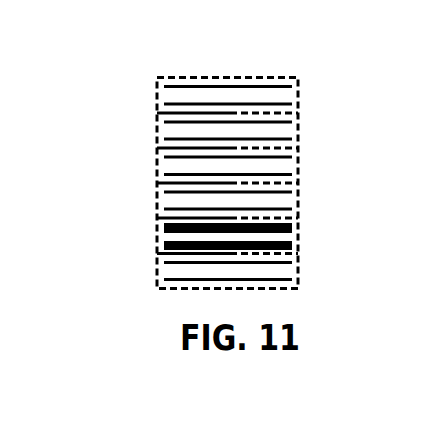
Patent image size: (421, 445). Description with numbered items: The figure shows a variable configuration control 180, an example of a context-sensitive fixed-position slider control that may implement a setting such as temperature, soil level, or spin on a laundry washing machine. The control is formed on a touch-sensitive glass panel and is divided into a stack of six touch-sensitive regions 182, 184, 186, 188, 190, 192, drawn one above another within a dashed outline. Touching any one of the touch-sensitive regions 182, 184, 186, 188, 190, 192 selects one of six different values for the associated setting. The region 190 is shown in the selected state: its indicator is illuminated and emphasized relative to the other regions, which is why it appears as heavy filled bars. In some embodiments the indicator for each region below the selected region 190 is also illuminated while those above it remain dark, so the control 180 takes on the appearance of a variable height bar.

The variable configuration control 180 is at (108, 85).
The touch-sensitive region 182 is at (156, 89).
The touch-sensitive region 184 is at (299, 132).
The touch-sensitive region 186 is at (156, 168).
The touch-sensitive region 188 is at (299, 202).
The touch-sensitive region 190 is at (156, 233).
The touch-sensitive region 192 is at (299, 272).